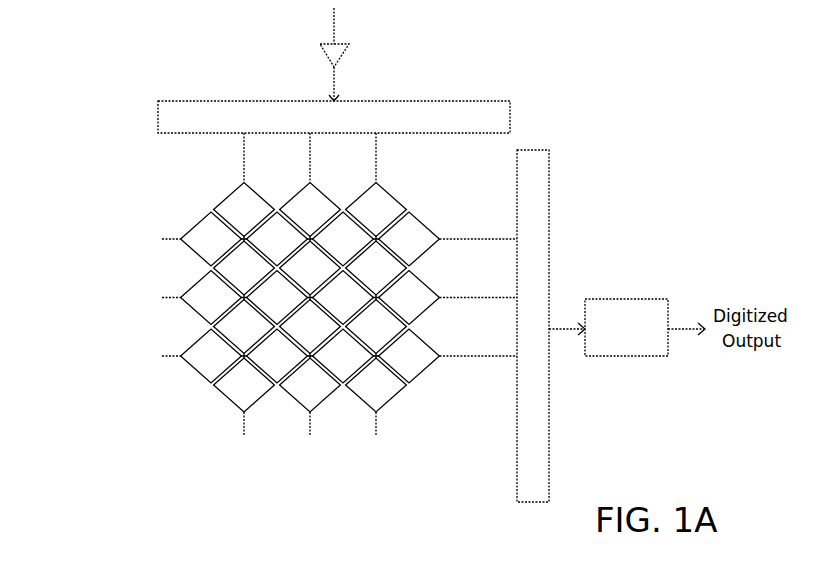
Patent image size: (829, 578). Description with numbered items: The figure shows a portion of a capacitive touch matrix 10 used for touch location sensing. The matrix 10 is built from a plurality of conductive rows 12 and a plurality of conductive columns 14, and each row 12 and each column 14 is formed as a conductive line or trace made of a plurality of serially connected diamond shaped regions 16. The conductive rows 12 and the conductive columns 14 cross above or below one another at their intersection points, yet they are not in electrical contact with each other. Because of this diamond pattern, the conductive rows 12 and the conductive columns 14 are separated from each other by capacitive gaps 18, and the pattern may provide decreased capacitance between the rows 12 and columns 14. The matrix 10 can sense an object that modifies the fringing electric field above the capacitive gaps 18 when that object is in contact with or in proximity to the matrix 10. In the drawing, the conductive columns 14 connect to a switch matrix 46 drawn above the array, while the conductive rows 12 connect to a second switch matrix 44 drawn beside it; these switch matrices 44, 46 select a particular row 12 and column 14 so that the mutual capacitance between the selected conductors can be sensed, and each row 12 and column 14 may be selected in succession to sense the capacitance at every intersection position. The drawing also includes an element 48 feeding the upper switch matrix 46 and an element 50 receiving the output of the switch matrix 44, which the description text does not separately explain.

The capacitive touch matrix 10 is at (97, 209).
The conductive rows 12 is at (124, 246).
The conductive columns 14 is at (380, 457).
The diamond shaped regions 16 is at (302, 188).
The capacitive gaps 18 is at (398, 225).
The switch matrix 44 is at (552, 184).
The switch matrix 46 is at (470, 101).
The excitation buffer 48 is at (345, 55).
The capacitance to digital converter 50 is at (648, 299).